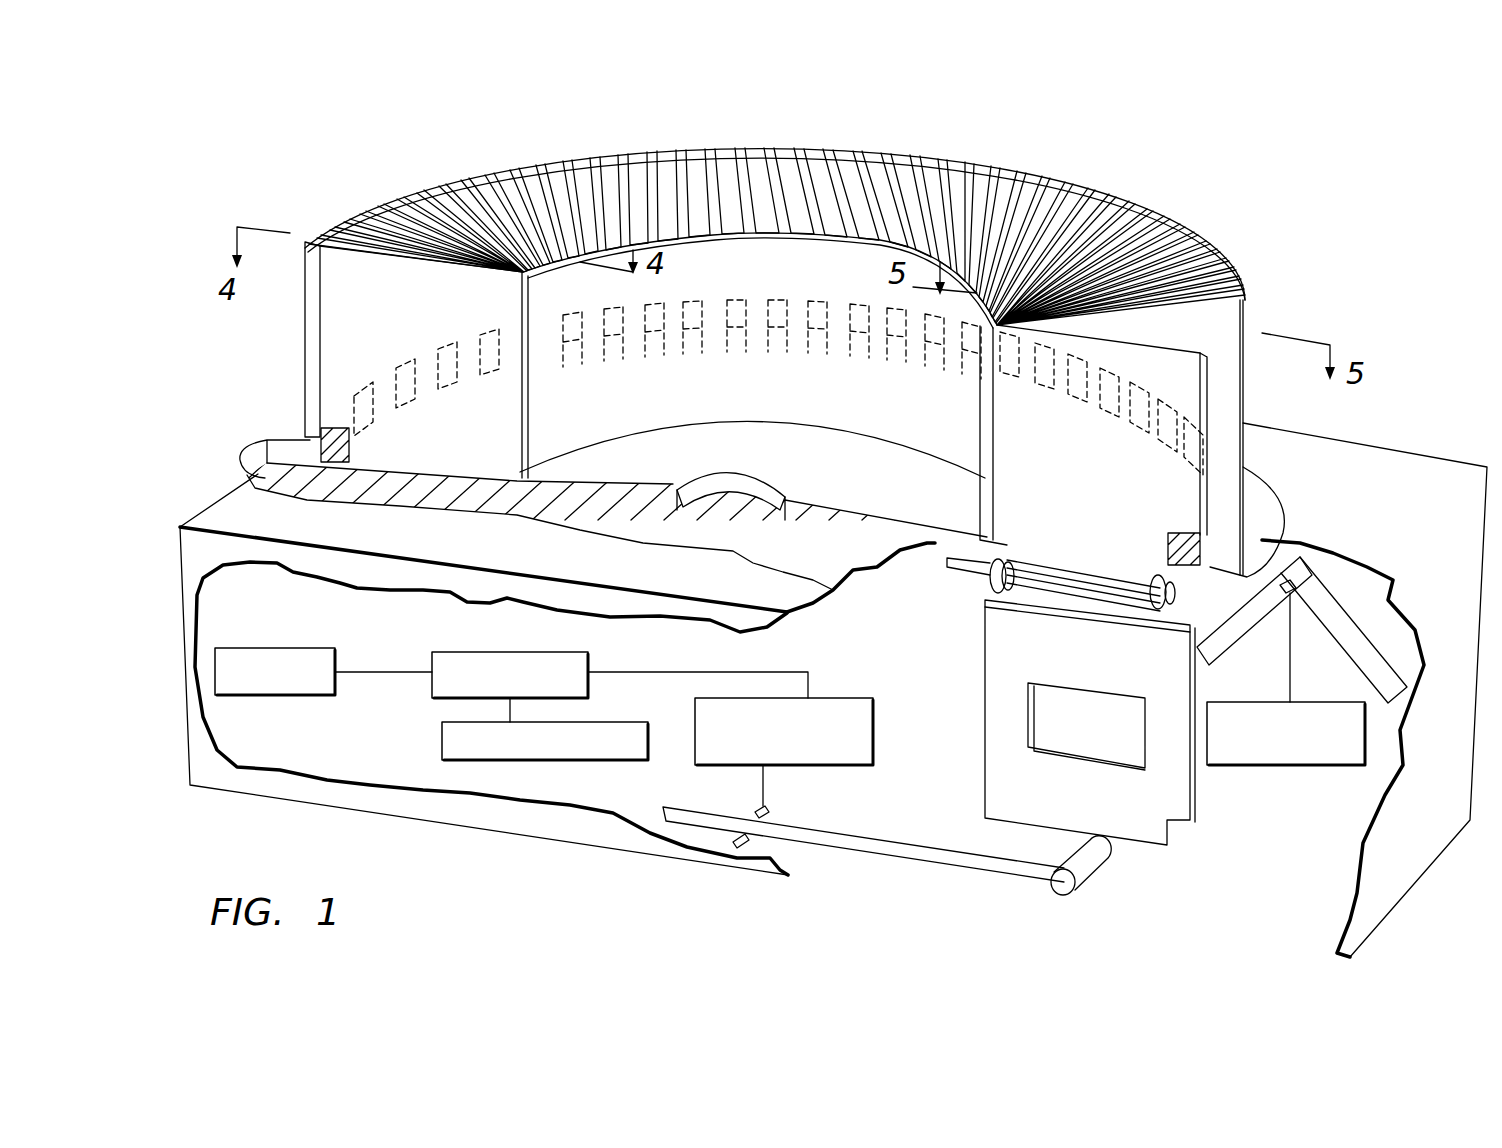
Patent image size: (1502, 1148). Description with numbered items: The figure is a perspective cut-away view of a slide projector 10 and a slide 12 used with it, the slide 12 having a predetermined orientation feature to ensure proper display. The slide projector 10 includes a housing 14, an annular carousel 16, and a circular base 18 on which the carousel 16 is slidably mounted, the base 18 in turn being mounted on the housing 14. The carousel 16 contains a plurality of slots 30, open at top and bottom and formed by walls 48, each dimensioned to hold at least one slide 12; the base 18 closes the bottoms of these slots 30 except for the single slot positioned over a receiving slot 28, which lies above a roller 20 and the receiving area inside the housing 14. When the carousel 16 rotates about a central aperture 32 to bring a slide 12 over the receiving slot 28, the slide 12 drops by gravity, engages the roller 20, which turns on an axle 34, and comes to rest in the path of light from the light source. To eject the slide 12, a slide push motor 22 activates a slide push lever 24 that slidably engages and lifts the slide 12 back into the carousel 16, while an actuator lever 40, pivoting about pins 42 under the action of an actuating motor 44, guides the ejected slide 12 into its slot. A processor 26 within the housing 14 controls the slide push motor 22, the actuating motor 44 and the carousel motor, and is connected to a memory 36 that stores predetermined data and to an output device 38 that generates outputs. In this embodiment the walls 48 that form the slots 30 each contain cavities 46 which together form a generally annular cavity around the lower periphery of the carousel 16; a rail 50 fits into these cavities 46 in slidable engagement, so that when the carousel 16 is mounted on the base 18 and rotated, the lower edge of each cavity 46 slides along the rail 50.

The slide projector 10 is at (370, 166).
The slide 12 is at (1125, 810).
The housing 14 is at (220, 497).
The carousel 16 is at (1213, 249).
The base 18 is at (272, 440).
The roller 20 is at (990, 595).
The slide push motor 22 is at (876, 731).
The slide push lever 24 is at (885, 865).
The processor 26 is at (440, 653).
The receiving slot 28 is at (1067, 530).
The slots 30 is at (930, 170).
The central aperture 32 is at (702, 460).
The axle 34 is at (985, 567).
The memory 36 is at (280, 646).
The output device 38 is at (442, 746).
The actuator lever 40 is at (1385, 660).
The pins 42 is at (1318, 560).
The actuating motor 44 is at (1290, 795).
The cavities 46 is at (445, 375).
The walls 48 is at (762, 159).
The rail 50 is at (335, 465).